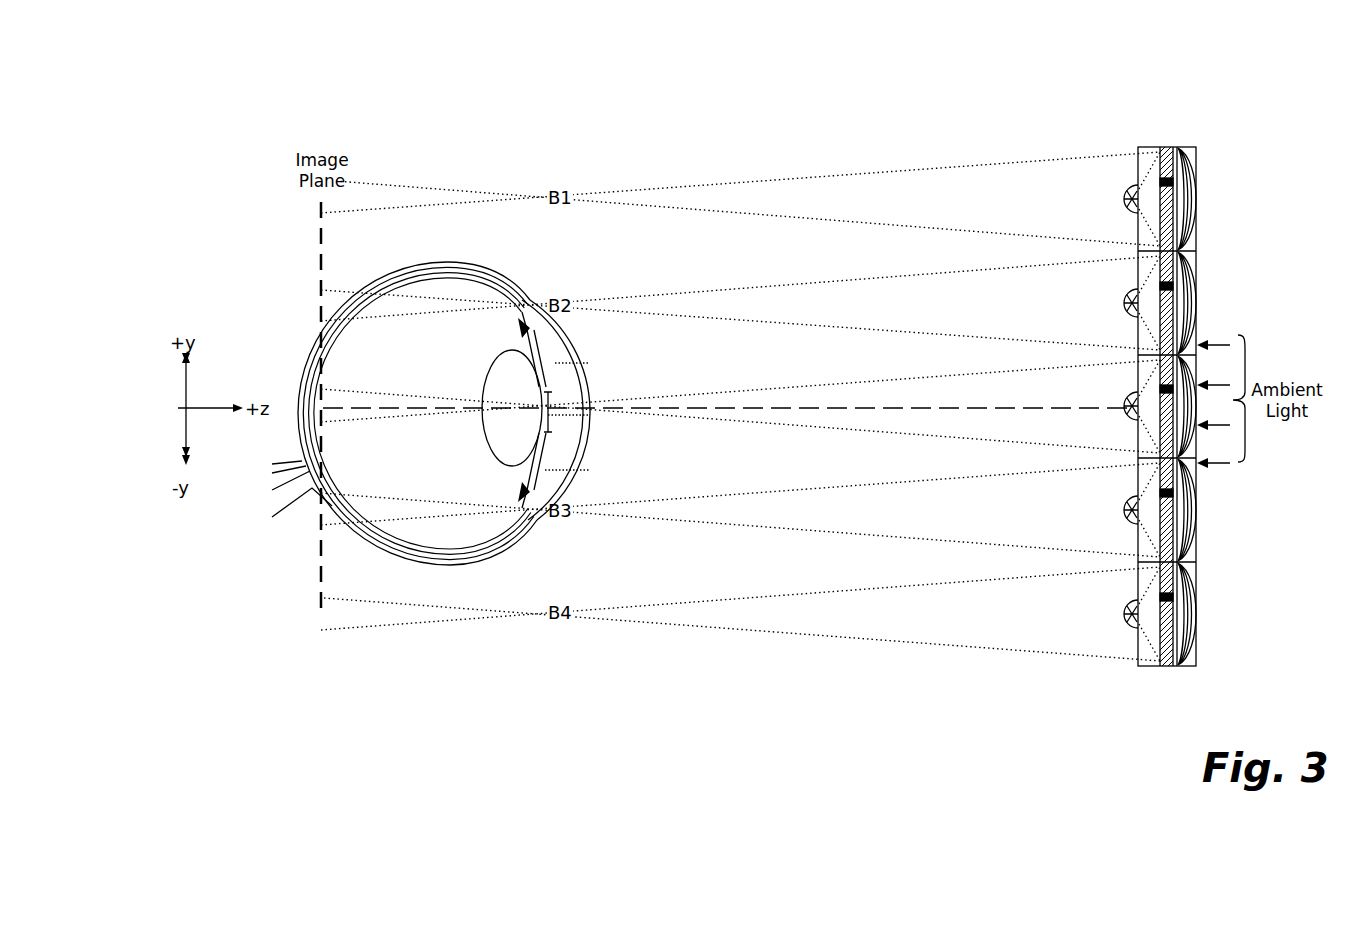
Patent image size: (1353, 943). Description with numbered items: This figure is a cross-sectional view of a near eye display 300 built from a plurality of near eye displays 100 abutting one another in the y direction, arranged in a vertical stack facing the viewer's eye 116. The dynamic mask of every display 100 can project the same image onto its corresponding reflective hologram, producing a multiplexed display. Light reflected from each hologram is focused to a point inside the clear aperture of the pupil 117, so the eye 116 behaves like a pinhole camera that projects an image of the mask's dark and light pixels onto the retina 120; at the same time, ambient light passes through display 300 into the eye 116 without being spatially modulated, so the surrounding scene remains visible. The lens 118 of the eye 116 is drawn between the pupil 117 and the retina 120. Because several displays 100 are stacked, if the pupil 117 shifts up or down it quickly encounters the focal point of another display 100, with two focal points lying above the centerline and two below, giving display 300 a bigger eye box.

The near eye display 100 is at (1197, 165).
The near eye display 300 is at (1142, 128).
The eye 116 is at (313, 321).
The pupil 117 is at (551, 408).
The lens of eye 118 is at (502, 381).
The retina 120 is at (323, 399).